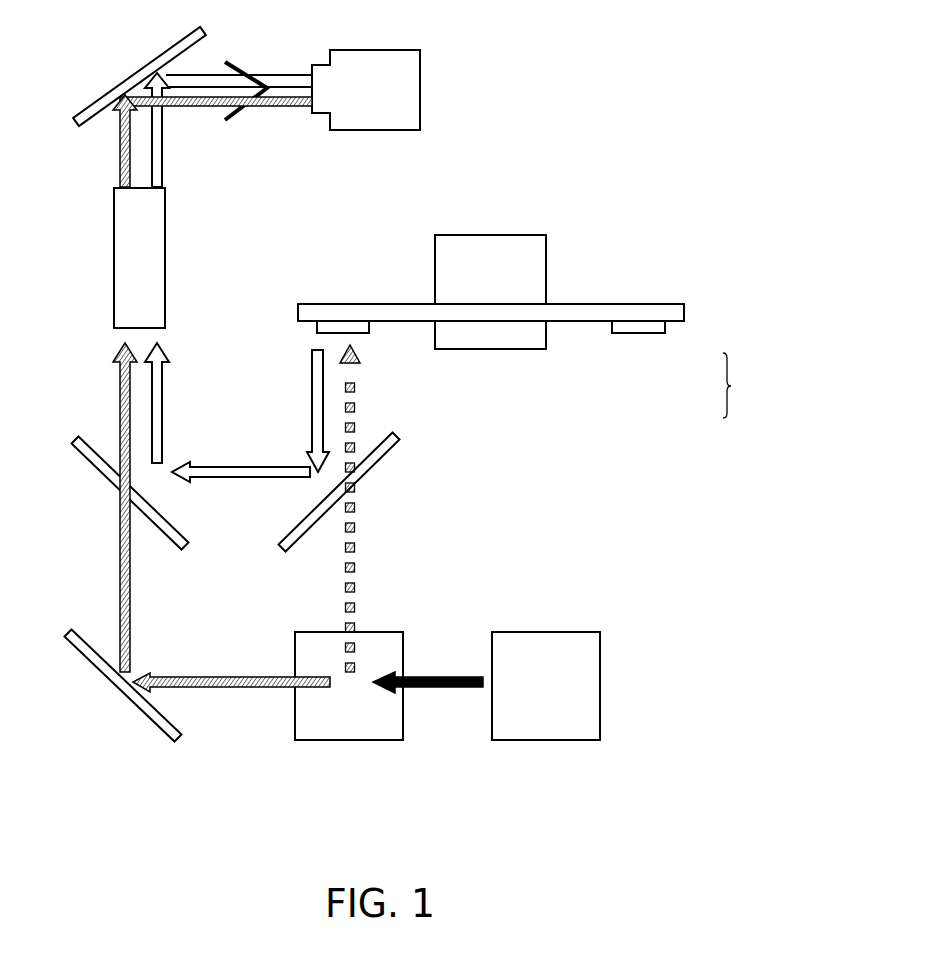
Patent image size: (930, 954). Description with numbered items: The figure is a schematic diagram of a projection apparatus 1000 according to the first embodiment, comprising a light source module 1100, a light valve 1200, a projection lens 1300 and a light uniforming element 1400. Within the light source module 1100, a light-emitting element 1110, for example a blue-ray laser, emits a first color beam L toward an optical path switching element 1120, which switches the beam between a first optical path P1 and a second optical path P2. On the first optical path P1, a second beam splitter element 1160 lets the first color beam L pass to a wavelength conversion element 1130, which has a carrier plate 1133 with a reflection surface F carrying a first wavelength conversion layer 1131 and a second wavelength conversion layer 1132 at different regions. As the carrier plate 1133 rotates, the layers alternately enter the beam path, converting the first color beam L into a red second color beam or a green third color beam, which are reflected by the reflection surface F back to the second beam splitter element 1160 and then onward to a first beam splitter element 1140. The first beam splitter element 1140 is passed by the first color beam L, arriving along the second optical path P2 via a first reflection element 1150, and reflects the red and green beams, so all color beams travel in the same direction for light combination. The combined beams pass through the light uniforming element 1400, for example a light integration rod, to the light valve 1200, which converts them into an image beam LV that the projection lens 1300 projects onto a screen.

The projection apparatus 1000 is at (717, 842).
The light source module 1100 is at (607, 528).
The light-emitting element 1110 is at (550, 742).
The optical path switching element 1120 is at (348, 742).
The wavelength conversion element 1130 is at (604, 326).
The first wavelength conversion layer 1131 is at (362, 334).
The second wavelength conversion layer 1132 is at (630, 333).
The carrier plate 1133 is at (675, 320).
The first beam splitter element 1140 is at (72, 447).
The first reflection element 1150 is at (174, 738).
The second beam splitter element 1160 is at (392, 437).
The light valve 1200 is at (137, 78).
The projection lens 1300 is at (423, 90).
The light uniforming element 1400 is at (117, 277).
The first color beam L is at (120, 172).
The image beam LV is at (231, 62).
The reflection surface F is at (305, 332).
The first optical path P1 is at (343, 593).
The second optical path P2 is at (243, 690).